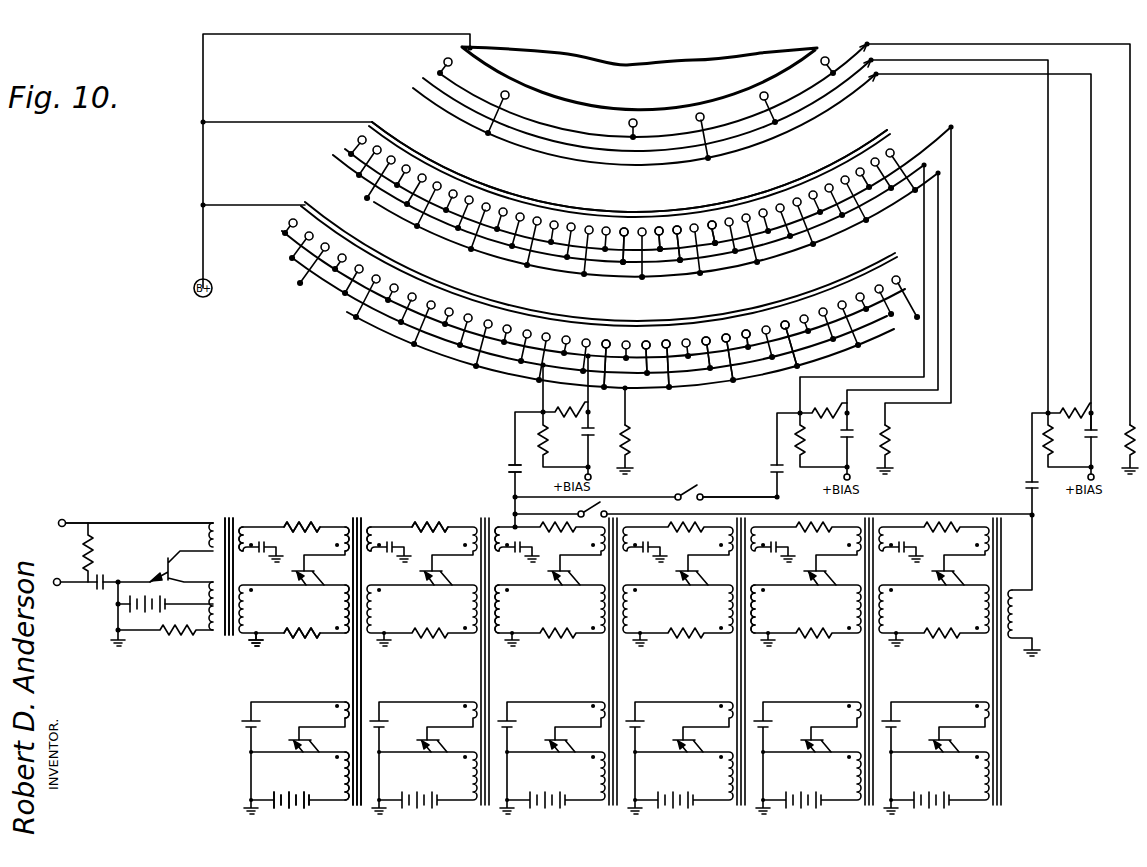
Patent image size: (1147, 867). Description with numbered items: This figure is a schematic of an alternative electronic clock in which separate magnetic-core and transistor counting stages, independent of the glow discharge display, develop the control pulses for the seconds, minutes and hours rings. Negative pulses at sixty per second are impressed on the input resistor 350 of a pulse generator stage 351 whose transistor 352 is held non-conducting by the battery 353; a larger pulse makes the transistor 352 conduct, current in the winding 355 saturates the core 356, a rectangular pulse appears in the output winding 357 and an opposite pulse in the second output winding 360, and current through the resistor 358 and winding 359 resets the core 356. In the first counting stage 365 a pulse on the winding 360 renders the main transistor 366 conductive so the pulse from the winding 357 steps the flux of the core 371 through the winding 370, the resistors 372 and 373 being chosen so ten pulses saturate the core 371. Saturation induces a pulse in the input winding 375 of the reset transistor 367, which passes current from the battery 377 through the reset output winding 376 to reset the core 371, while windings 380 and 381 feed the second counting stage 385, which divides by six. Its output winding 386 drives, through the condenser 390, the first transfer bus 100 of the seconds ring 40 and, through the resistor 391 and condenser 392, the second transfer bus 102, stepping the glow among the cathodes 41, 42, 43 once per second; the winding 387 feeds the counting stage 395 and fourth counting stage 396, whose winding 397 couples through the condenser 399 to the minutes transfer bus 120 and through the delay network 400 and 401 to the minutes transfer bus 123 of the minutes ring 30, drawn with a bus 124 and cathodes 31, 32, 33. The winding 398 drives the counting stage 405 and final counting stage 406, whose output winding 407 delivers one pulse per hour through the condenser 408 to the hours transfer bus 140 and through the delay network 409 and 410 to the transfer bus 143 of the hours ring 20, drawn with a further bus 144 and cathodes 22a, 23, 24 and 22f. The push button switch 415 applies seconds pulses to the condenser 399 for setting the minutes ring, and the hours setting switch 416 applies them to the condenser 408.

The arcuate contact arm 20 is at (720, 66).
The hours transfer bus 140 is at (423, 78).
The contact 144 is at (440, 72).
The transfer bus 143 is at (490, 140).
The contact 22a is at (633, 120).
The contact 24 is at (700, 114).
The contact 23 is at (762, 94).
The contact 22f is at (828, 58).
The commutator rail 124 is at (358, 144).
The commutator 30 is at (582, 207).
The minutes transfer bus 120 is at (340, 152).
The minutes transfer bus 123 is at (385, 210).
The contact 31 is at (715, 206).
The contact 32 is at (678, 218).
The contact 33 is at (660, 210).
The commutator rail 40 is at (503, 308).
The first transfer bus 100 is at (283, 236).
The second transfer bus 102 is at (350, 312).
The glow cathodes 41 is at (785, 318).
The contact 42 is at (746, 325).
The contact 43 is at (726, 330).
The resistor 391 is at (543, 410).
The condenser 392 is at (594, 432).
The condenser 390 is at (510, 466).
The time delay network 400 is at (800, 413).
The time delay network 401 is at (854, 432).
The condenser 399 is at (772, 468).
The time delay network 409 is at (1068, 412).
The time delay network 410 is at (1108, 430).
The condenser 408 is at (1025, 485).
The first push button switch 415 is at (695, 488).
The hours setting switch 416 is at (600, 510).
The winding 397 is at (768, 514).
The output winding 407 is at (1020, 615).
The pulse generator stage 351 is at (152, 507).
The input resistor 350 is at (93, 552).
The battery 353 is at (97, 590).
The transistor 352 is at (165, 560).
The winding 355 is at (213, 527).
The winding 359 is at (213, 634).
The resistor 358 is at (180, 636).
The core 356 is at (227, 517).
The main transistor 366 is at (310, 586).
The winding 380 is at (427, 591).
The counting stage 395 is at (562, 607).
The fourth counting stage 396 is at (694, 612).
The counting stage 405 is at (817, 602).
The final counting stage 406 is at (948, 607).
The reset transistor 367 is at (306, 758).
The second output winding 360 is at (245, 525).
The first counting stage 365 is at (305, 515).
The first counting stage core 371 is at (346, 526).
The resistor 372 is at (355, 516).
The winding 381 is at (372, 525).
The second counting stage 385 is at (428, 526).
The output winding 386 is at (499, 525).
The winding 370 is at (345, 610).
The resistor 373 is at (302, 638).
The output winding 357 is at (256, 640).
The input winding 375 is at (340, 702).
The reset output winding 376 is at (345, 800).
The battery 377 is at (270, 805).
The output winding 387 is at (505, 610).
The winding 398 is at (760, 612).